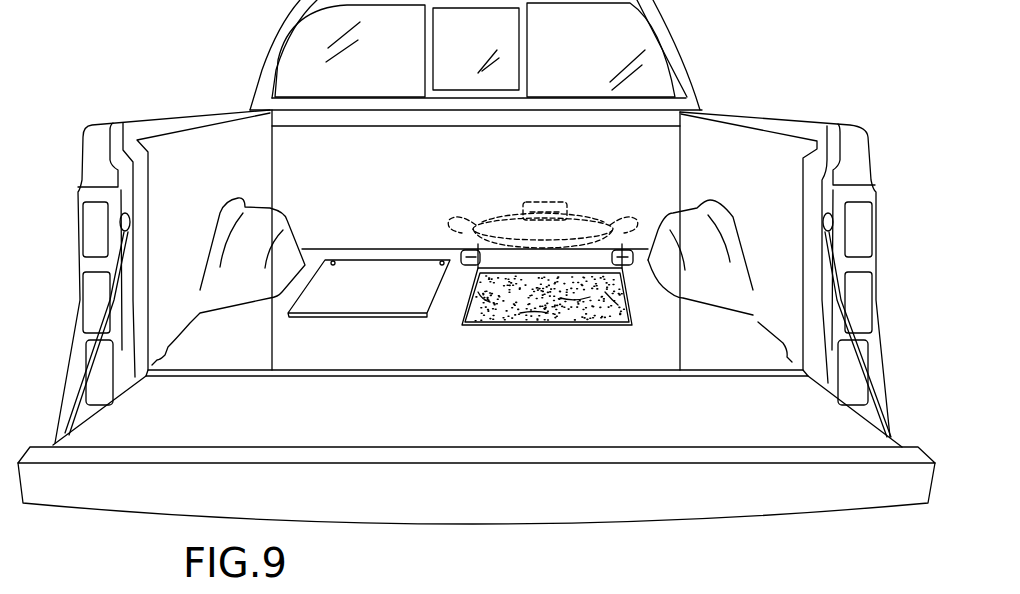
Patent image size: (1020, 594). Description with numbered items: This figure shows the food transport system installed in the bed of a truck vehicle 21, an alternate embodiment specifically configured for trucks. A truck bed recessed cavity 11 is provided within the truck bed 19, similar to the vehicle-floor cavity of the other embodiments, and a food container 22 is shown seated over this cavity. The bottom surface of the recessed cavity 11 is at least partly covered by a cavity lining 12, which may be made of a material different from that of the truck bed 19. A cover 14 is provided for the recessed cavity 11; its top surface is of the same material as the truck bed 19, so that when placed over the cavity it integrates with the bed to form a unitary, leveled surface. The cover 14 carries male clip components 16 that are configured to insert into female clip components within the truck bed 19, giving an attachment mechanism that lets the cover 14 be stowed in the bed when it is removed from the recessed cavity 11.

The truck bed recessed cavity 11 is at (483, 318).
The cavity lining 12 is at (607, 324).
The cover 14 is at (387, 316).
The male clip component 16 is at (333, 262).
The truck bed 19 is at (397, 287).
The truck vehicle 21 is at (742, 110).
The food container 22 is at (512, 217).